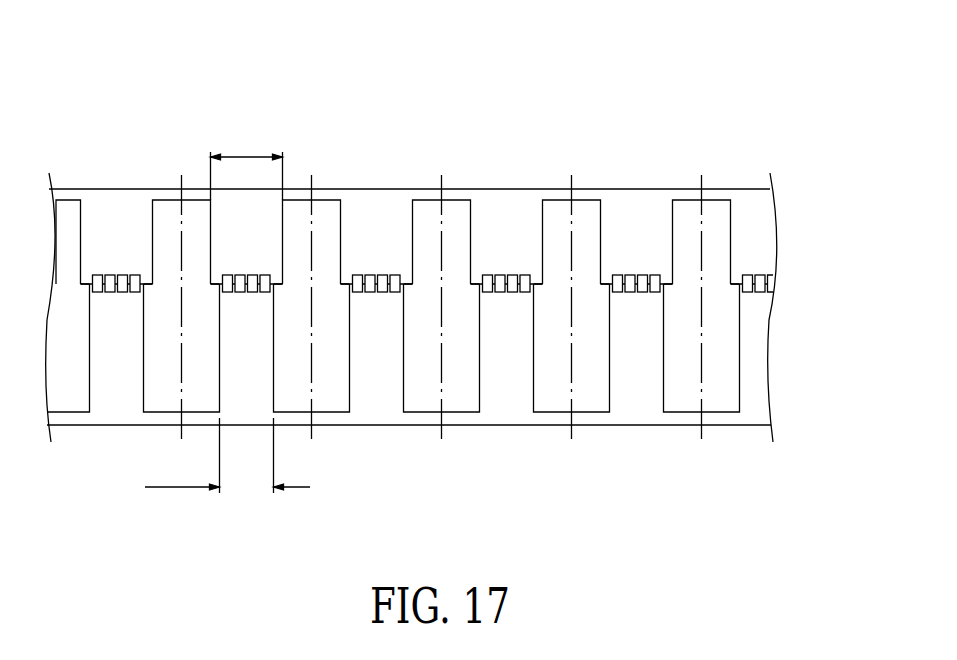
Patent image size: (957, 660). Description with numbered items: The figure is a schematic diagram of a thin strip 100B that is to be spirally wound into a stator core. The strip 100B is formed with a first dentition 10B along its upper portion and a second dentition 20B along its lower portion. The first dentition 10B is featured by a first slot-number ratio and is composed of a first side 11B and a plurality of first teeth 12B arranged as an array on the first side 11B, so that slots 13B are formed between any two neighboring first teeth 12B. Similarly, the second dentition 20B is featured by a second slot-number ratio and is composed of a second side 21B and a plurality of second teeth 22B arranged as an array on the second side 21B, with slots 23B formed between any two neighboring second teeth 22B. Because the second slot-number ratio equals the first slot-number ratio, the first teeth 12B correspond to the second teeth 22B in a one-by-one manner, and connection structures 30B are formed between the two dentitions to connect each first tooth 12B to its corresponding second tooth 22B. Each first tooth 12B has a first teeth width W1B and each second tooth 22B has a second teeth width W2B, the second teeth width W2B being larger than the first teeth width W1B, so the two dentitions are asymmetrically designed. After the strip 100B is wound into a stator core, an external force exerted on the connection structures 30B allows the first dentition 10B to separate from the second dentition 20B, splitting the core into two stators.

The strip 100B is at (635, 88).
The first dentition 10B is at (409, 176).
The first side 11B is at (558, 195).
The first teeth 12B is at (592, 118).
The slots 13B is at (424, 225).
The second dentition 20B is at (409, 418).
The second side 21B is at (557, 418).
The second teeth 22B is at (508, 373).
The slots 23B is at (425, 388).
The connection structures 30B is at (639, 265).
The first teeth width W1B is at (247, 161).
The second teeth width W2B is at (227, 455).